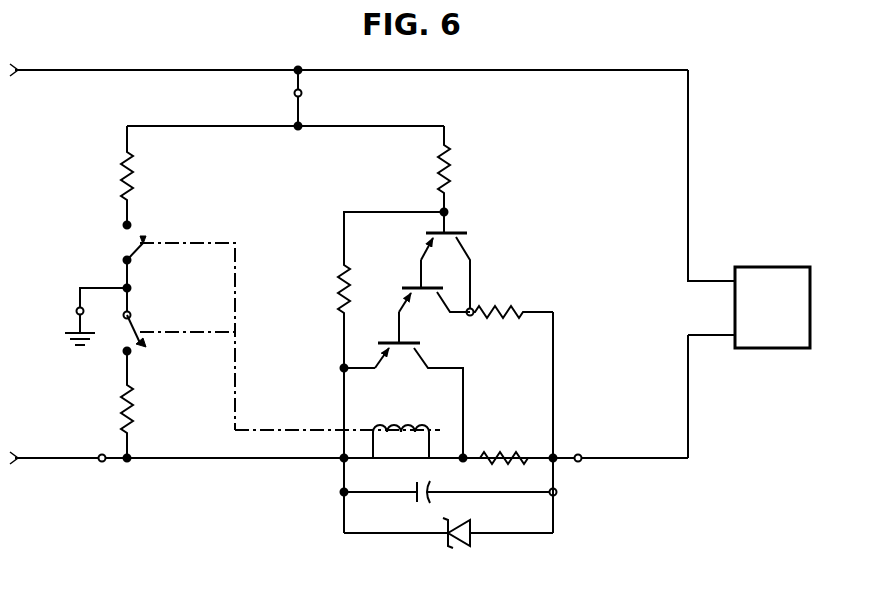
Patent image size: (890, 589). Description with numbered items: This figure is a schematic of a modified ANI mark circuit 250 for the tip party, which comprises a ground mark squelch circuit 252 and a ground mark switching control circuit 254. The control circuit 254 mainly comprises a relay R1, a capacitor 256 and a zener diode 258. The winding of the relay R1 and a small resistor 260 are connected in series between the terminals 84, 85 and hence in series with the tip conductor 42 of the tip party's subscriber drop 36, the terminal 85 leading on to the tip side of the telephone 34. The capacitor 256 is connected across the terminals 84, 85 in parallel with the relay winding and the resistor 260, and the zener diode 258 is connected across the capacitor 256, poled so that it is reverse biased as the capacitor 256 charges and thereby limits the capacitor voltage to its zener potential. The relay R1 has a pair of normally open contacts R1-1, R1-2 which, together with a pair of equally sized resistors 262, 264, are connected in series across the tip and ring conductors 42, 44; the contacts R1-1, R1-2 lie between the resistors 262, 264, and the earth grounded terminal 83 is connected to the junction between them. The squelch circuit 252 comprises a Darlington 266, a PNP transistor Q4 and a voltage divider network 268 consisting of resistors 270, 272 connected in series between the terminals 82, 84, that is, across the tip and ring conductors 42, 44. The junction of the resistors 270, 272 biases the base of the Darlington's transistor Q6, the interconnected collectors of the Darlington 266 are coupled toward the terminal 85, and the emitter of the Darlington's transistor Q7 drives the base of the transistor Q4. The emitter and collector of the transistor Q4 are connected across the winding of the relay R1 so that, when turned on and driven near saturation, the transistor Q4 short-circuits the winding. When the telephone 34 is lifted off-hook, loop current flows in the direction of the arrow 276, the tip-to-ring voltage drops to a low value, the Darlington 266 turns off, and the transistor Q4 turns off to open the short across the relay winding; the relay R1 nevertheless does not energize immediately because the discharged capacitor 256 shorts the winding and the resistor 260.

The subscriber drop 36 is at (142, 57).
The ring conductor 44 is at (107, 70).
The ANI mark circuit 250 is at (548, 46).
The terminal 82 is at (302, 93).
The resistor 262 is at (133, 176).
The resistor 270 is at (449, 168).
The ground mark squelch circuit 252 is at (504, 210).
The voltage divider network 268 is at (328, 246).
The resistor 272 is at (339, 285).
The Darlington 266 is at (480, 290).
The relay contact R1-1 is at (147, 233).
The relay contact R1-2 is at (145, 340).
The earth grounded terminal 83 is at (77, 310).
The transistor Q6 is at (425, 238).
The transistor Q7 is at (408, 291).
The PNP transistor Q4 is at (418, 350).
The telephone 34 is at (810, 333).
The terminal 84 is at (101, 454).
The resistor 264 is at (133, 410).
The tip conductor 42 is at (72, 459).
The relay R1 is at (337, 433).
The resistor 260 is at (518, 432).
The arrow 276 is at (674, 412).
The terminal 85 is at (581, 462).
The capacitor 256 is at (434, 488).
The ground mark switching control circuit 254 is at (572, 502).
The zener diode 258 is at (446, 537).